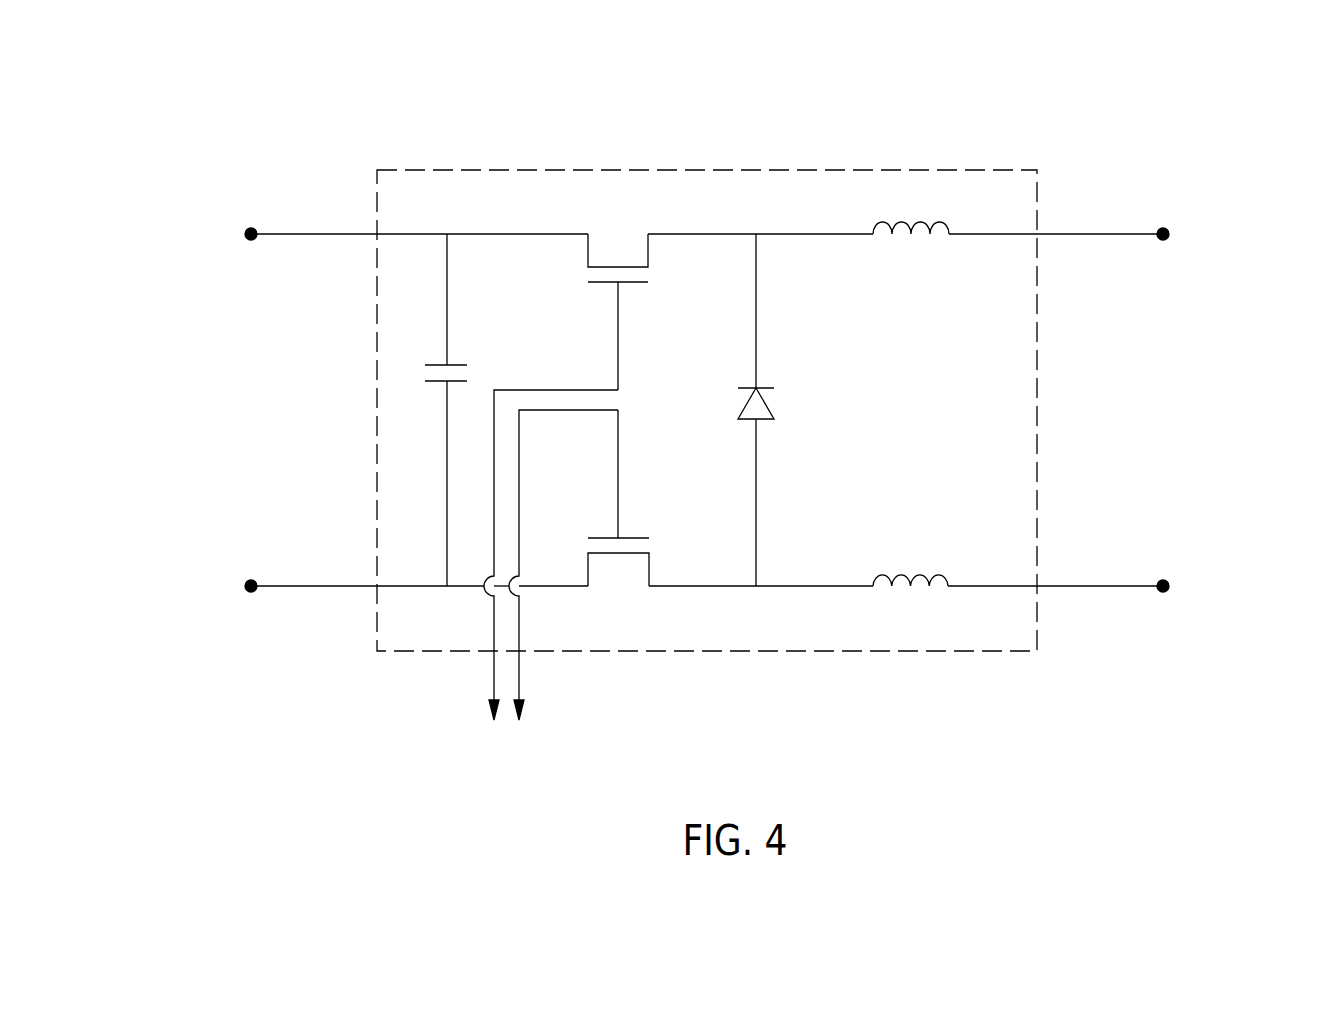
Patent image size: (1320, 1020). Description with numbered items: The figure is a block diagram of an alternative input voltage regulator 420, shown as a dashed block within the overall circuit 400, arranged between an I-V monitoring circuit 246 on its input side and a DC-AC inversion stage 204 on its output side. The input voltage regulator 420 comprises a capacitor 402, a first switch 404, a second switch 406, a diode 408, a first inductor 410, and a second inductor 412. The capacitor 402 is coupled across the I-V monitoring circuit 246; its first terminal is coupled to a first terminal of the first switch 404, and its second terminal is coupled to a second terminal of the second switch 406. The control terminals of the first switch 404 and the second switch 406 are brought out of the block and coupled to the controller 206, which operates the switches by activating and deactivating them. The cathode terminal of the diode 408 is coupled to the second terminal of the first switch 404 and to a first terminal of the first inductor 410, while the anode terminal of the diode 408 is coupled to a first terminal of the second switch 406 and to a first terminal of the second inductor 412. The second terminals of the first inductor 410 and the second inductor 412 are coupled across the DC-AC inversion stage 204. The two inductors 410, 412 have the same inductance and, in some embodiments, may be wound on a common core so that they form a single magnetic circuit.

The DC-DC conversion stage circuit 400 is at (815, 353).
The input voltage regulator 420 is at (723, 170).
The capacitor 402 is at (460, 364).
The first switch 404 is at (588, 258).
The second switch 406 is at (650, 563).
The diode 408 is at (765, 401).
The first inductor 410 is at (878, 222).
The second inductor 412 is at (900, 573).
The I-V monitoring circuit 246 is at (216, 410).
The DC-AC inversion stage 204 is at (1183, 410).
The controller 206 is at (521, 604).